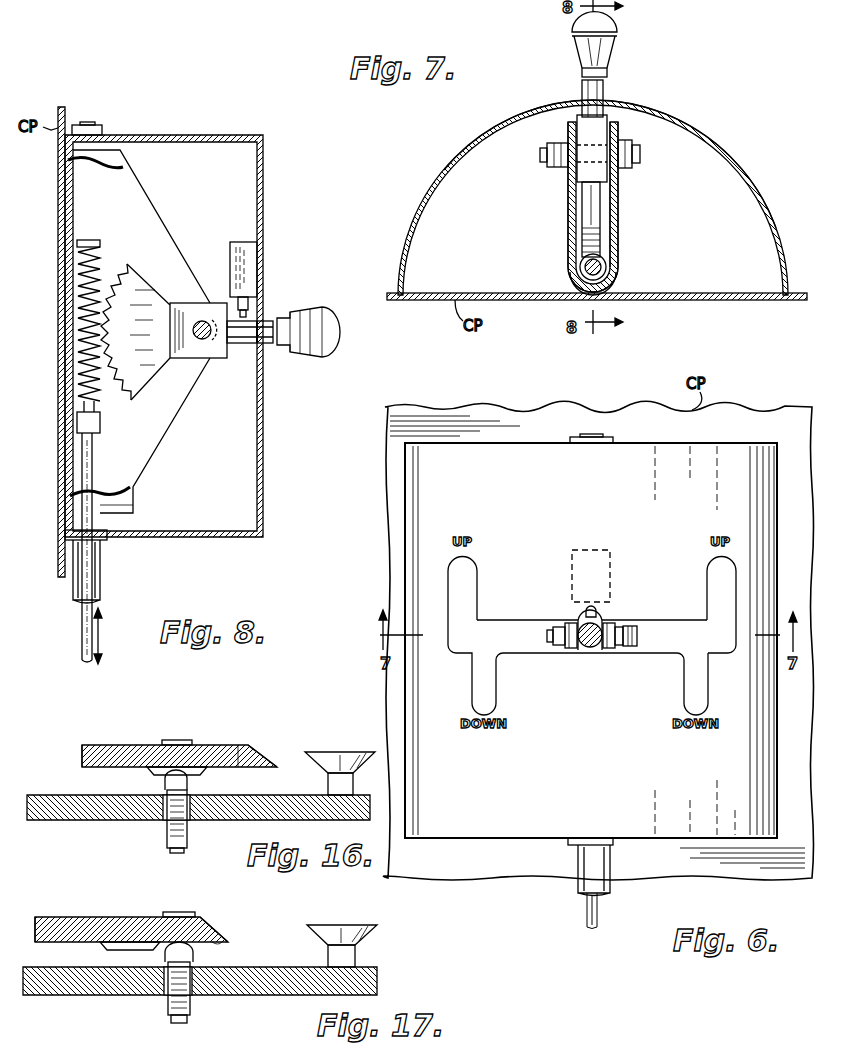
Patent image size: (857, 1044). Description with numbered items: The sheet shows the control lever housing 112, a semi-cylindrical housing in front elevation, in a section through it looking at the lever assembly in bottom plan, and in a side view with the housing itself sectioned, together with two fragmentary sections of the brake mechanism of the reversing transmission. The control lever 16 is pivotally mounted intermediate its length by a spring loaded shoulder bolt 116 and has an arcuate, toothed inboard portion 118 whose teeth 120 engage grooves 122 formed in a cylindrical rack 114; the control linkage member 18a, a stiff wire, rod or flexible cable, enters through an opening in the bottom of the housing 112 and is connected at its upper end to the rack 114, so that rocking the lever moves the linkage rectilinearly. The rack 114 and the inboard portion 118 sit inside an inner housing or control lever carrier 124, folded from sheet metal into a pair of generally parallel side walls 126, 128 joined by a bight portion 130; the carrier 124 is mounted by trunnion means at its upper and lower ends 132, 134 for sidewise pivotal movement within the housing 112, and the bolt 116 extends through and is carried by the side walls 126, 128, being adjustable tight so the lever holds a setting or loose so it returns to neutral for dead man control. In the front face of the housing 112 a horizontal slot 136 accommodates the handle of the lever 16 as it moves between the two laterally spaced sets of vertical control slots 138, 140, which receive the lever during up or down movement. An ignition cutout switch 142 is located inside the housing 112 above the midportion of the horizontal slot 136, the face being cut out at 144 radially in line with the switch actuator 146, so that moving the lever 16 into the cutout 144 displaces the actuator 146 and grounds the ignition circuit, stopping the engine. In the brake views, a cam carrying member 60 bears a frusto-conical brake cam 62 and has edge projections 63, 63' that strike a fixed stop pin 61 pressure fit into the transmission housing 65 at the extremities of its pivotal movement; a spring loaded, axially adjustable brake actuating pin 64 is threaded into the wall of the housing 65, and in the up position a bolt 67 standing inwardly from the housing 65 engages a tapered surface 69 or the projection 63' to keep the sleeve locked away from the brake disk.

In FIG. 8, the control lever 16 is at (292, 313).
In FIG. 7, the control lever 16 is at (609, 72).
In FIG. 6, the control lever 16 is at (592, 643).
In FIG. 8, the control linkage member 18a is at (83, 636).
In FIG. 6, the control linkage member 18a is at (600, 904).
In FIG. 16, the cam carrying member 60 is at (140, 744).
In FIG. 17, the cam carrying member 60 is at (102, 917).
In FIG. 16, the fixed stop pin 61 is at (176, 740).
In FIG. 17, the fixed stop pin 61 is at (177, 912).
In FIG. 16, the brake cam 62 is at (206, 776).
In FIG. 17, the brake cam 62 is at (134, 952).
In FIG. 16, the projection 63 is at (92, 741).
In FIG. 17, the projection 63 is at (47, 917).
In FIG. 16, the projection 63' is at (244, 739).
In FIG. 17, the projection 63' is at (237, 950).
In FIG. 16, the brake actuating pin 64 is at (172, 830).
In FIG. 17, the brake actuating pin 64 is at (170, 1012).
In FIG. 16, the reversing transmission housing 65 is at (221, 818).
In FIG. 17, the reversing transmission housing 65 is at (240, 994).
In FIG. 16, the bolt 67 is at (334, 753).
In FIG. 17, the bolt 67 is at (338, 927).
In FIG. 16, the tapered surface 69 is at (256, 752).
In FIG. 17, the tapered surface 69 is at (222, 923).
In FIG. 8, the control lever housing 112 is at (260, 501).
In FIG. 7, the control lever housing 112 is at (434, 185).
In FIG. 6, the control lever housing 112 is at (518, 830).
In FIG. 8, the cylindrical rack 114 is at (101, 417).
In FIG. 7, the cylindrical rack 114 is at (578, 264).
In FIG. 8, the spring loaded shoulder bolt 116 is at (205, 343).
In FIG. 7, the spring loaded shoulder bolt 116 is at (637, 153).
In FIG. 6, the spring loaded shoulder bolt 116 is at (633, 643).
In FIG. 8, the arcuate toothed inboard portion 118 is at (172, 303).
In FIG. 8, the teeth 120 is at (127, 262).
In FIG. 7, the teeth 120 is at (582, 243).
In FIG. 8, the grooves 122 is at (99, 247).
In FIG. 8, the inner housing (control lever carrier) 124 is at (160, 465).
In FIG. 7, the inner housing (control lever carrier) 124 is at (638, 224).
In FIG. 8, the side wall 126 is at (116, 502).
In FIG. 7, the side wall 126 is at (618, 182).
In FIG. 8, the side wall 128 is at (140, 201).
In FIG. 7, the side wall 128 is at (567, 188).
In FIG. 8, the bight portion 130 is at (70, 493).
In FIG. 7, the bight portion 130 is at (616, 280).
In FIG. 8, the upper end 132 is at (105, 134).
In FIG. 8, the lower end 134 is at (100, 530).
In FIG. 8, the horizontal slot 136 is at (263, 349).
In FIG. 7, the horizontal slot 136 is at (530, 109).
In FIG. 6, the horizontal slot 136 is at (660, 627).
In FIG. 7, the vertical control slots 138 is at (734, 151).
In FIG. 6, the vertical control slots 138 is at (722, 597).
In FIG. 7, the vertical control slots 140 is at (472, 145).
In FIG. 6, the vertical control slots 140 is at (462, 591).
In FIG. 8, the ignition cutout switch 142 is at (258, 246).
In FIG. 6, the ignition cutout switch 142 is at (594, 558).
In FIG. 8, the cutout 144 is at (265, 319).
In FIG. 7, the cutout 144 is at (607, 91).
In FIG. 6, the cutout 144 is at (578, 619).
In FIG. 8, the switch actuator 146 is at (251, 299).
In FIG. 6, the switch actuator 146 is at (597, 610).